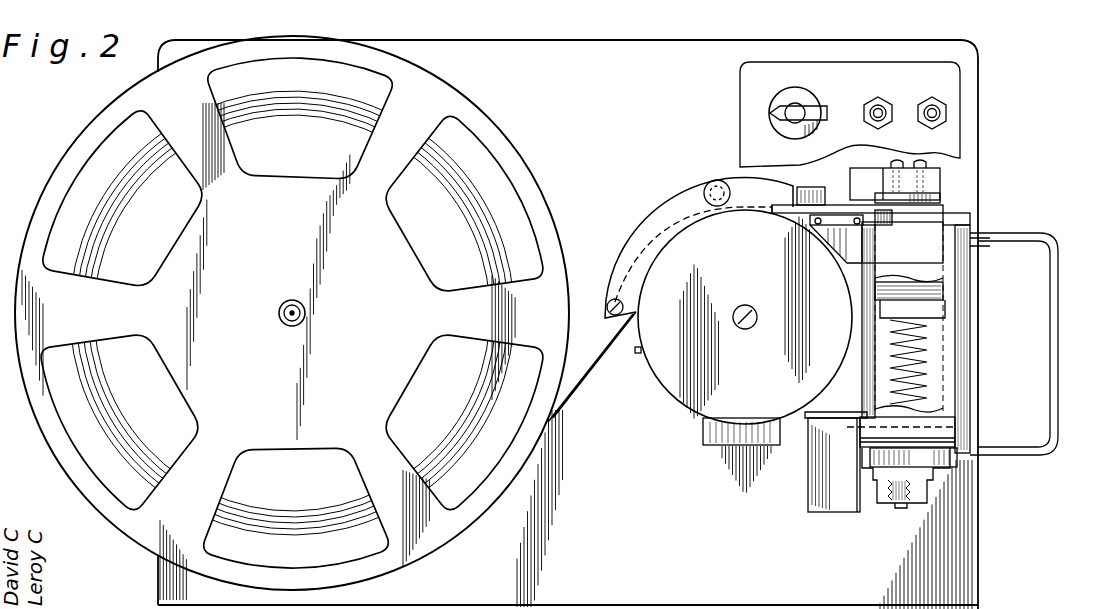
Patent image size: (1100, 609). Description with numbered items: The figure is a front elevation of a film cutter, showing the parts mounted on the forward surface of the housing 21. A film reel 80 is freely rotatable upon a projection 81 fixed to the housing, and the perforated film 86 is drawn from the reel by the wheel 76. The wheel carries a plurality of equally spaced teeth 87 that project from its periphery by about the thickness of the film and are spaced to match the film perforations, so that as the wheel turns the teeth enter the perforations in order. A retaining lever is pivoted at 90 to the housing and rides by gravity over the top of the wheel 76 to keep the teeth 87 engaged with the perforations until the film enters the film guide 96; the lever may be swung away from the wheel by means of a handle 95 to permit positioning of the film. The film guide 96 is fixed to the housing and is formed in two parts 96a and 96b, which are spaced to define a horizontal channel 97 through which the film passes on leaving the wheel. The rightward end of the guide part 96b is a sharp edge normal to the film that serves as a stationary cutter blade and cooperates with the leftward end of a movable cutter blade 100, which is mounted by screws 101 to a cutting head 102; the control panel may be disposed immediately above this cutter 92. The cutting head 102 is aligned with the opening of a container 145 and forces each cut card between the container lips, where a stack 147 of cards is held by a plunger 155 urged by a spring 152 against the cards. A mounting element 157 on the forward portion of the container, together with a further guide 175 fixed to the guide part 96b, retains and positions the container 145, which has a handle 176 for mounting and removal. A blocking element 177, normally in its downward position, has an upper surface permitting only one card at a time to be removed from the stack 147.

The housing 21 is at (703, 50).
The wheel 76 is at (693, 382).
The film reel 80 is at (498, 108).
The projection 81 is at (305, 312).
The film 86 is at (570, 404).
The teeth 87 is at (641, 264).
The pivot 90 is at (608, 318).
The cutter 92 is at (950, 196).
The handle 95 is at (716, 180).
The film guide 96 is at (666, 208).
The film guide part 96a is at (806, 187).
The film guide part 96b is at (800, 215).
The horizontal channel 97 is at (848, 208).
The movable cutter blade 100 is at (948, 208).
The screws 101 is at (865, 168).
The cutting head 102 is at (880, 195).
The container 145 is at (950, 387).
The stack 147 is at (935, 290).
The spring 152 is at (928, 390).
The plunger 155 is at (912, 309).
The mounting element 157 is at (918, 504).
The further guide 175 is at (905, 262).
The handle 176 is at (1025, 454).
The blocking element 177 is at (960, 218).